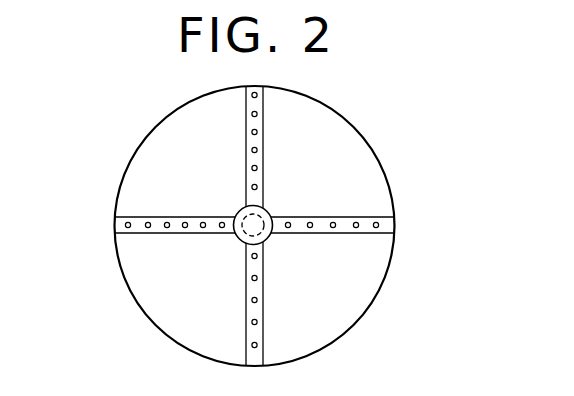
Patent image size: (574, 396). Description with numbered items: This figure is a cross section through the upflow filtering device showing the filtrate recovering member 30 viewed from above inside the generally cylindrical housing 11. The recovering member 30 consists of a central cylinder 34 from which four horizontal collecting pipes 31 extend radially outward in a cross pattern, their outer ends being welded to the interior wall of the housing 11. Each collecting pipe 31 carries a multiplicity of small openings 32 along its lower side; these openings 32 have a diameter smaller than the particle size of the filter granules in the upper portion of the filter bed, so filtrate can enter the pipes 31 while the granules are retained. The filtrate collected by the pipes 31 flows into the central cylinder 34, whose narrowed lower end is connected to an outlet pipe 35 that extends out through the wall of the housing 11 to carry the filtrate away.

The housing 11 is at (375, 153).
The filtrate recovering member 30 is at (293, 226).
The horizontal collecting pipes 31 is at (245, 123).
The small openings 32 is at (150, 221).
The central cylinder 34 is at (270, 212).
The outlet pipe 35 is at (240, 242).